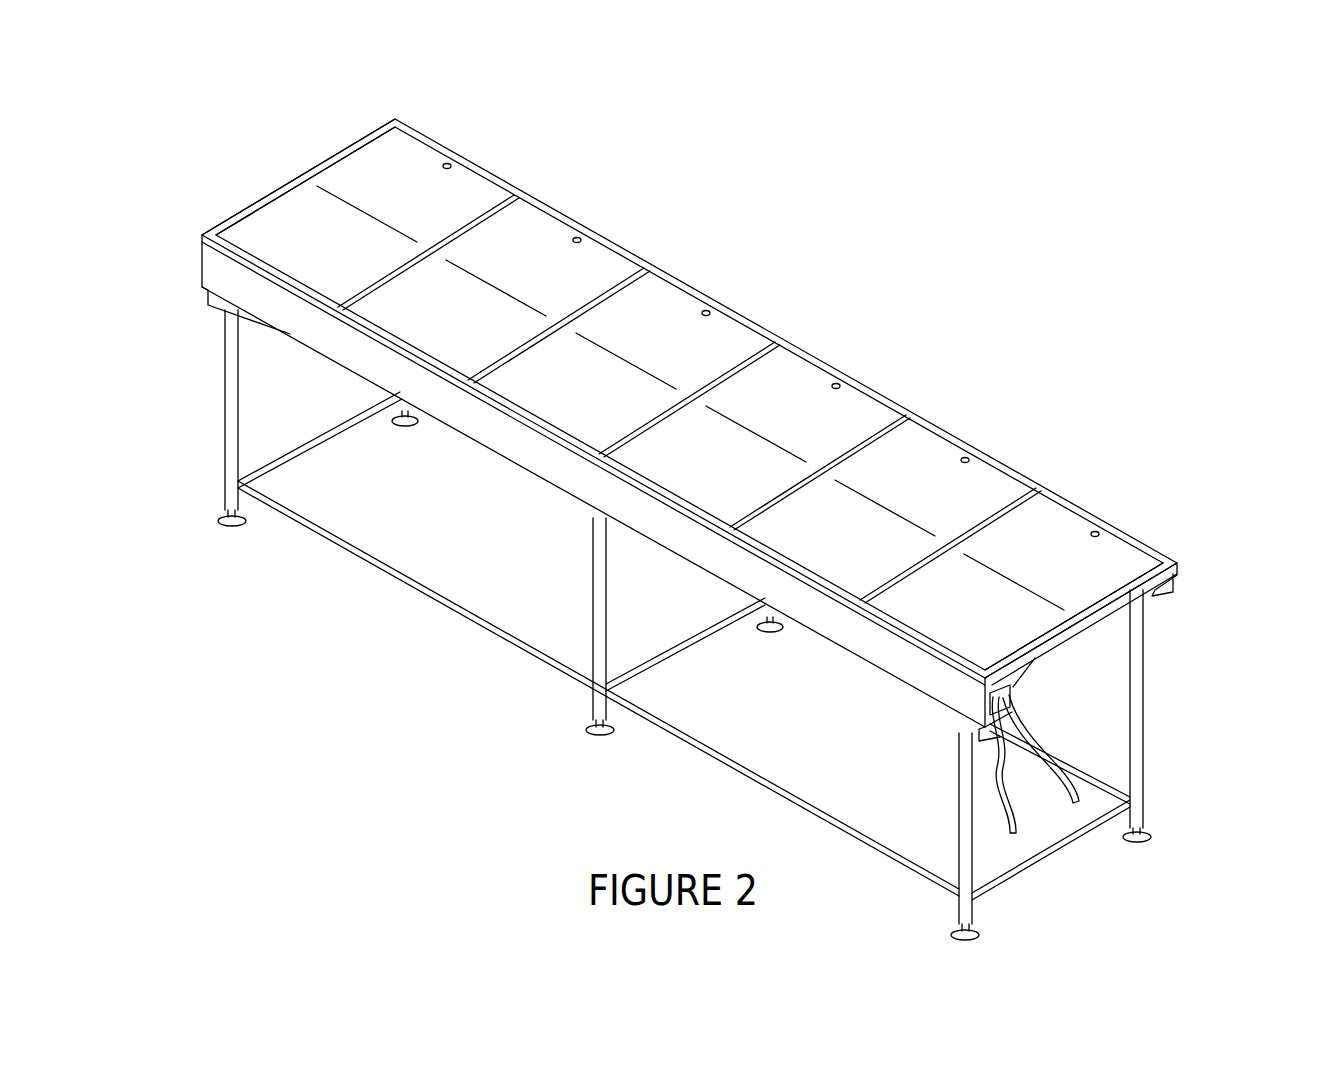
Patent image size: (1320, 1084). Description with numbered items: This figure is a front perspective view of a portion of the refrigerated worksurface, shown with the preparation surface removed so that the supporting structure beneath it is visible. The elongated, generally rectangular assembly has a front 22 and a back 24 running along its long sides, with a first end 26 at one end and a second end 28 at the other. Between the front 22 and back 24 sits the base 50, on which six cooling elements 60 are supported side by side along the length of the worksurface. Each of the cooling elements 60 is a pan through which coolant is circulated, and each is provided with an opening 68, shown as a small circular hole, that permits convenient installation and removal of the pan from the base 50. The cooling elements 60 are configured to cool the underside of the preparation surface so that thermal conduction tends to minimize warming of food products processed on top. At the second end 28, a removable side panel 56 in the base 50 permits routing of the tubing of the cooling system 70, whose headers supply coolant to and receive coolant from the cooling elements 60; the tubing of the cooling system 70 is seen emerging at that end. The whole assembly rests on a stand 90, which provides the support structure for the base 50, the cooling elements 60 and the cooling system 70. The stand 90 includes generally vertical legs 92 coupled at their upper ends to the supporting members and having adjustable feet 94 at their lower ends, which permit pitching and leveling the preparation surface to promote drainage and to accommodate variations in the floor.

The front 22 is at (701, 512).
The back 24 is at (747, 385).
The first end 26 is at (291, 163).
The second end 28 is at (1172, 612).
The base 50 is at (522, 449).
The removable side panels 56 is at (1013, 692).
The cooling elements 60 is at (478, 190).
The opening 68 is at (579, 236).
The cooling system 70 is at (1034, 820).
The stand 90 is at (556, 699).
The legs 92 is at (962, 793).
The feet 94 is at (604, 736).